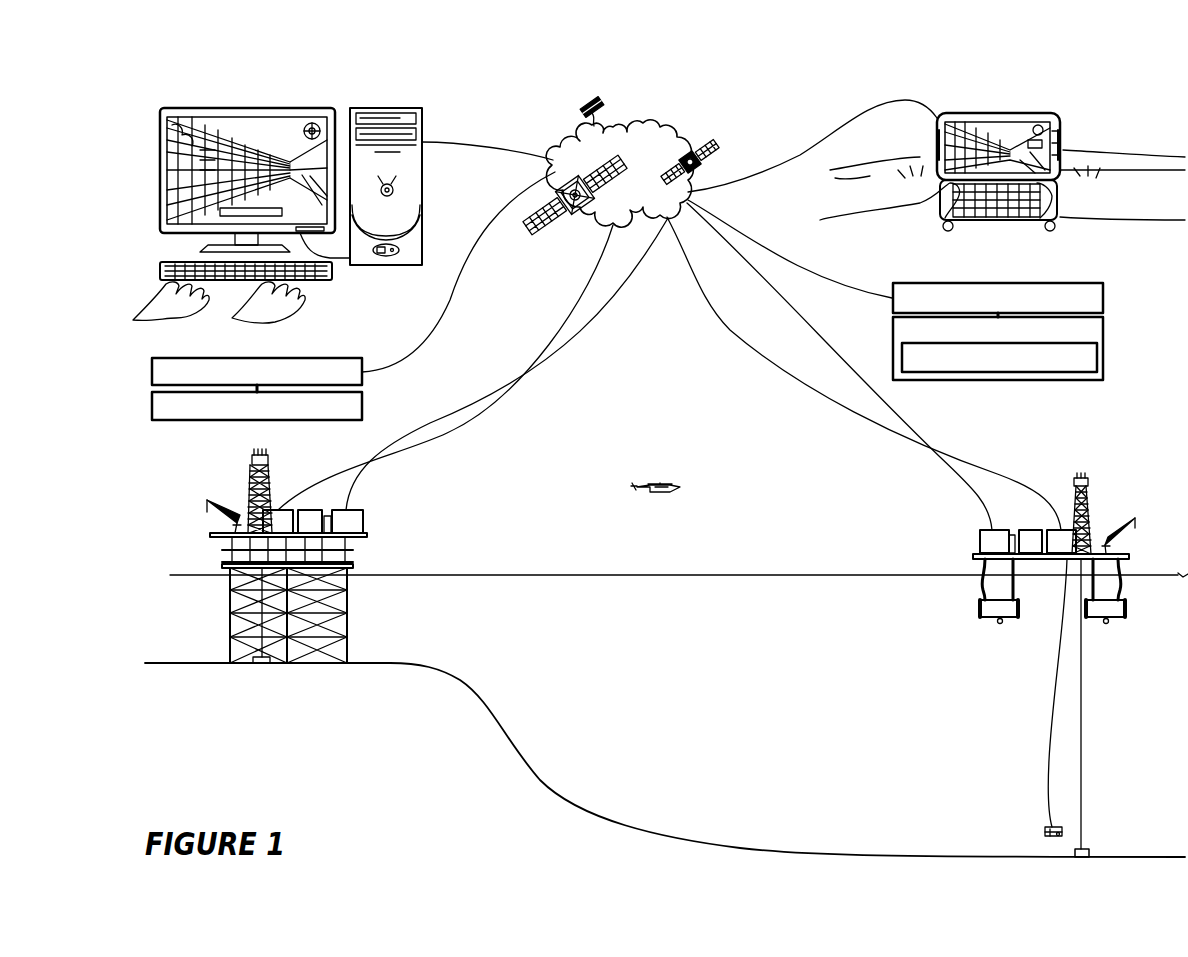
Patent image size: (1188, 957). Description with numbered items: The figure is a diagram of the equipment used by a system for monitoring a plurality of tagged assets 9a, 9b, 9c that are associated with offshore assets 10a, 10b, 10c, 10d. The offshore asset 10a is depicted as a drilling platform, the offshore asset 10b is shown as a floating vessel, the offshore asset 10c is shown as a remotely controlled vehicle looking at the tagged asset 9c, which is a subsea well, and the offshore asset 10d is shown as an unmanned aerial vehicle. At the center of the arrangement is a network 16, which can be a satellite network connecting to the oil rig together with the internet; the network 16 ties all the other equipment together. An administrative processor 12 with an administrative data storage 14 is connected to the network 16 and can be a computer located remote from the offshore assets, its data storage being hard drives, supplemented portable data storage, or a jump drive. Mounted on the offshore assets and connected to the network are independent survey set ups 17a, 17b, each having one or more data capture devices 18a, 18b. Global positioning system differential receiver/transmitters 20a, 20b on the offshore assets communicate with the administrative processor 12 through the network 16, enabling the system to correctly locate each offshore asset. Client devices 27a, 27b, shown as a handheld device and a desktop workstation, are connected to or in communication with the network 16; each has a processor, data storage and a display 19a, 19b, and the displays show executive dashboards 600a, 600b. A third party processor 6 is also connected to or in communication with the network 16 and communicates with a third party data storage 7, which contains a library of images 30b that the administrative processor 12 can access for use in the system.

The third party processor 6 is at (1103, 297).
The third party data storage 7 is at (1103, 329).
The tagged asset 9a is at (310, 521).
The tagged asset 9b is at (1030, 541).
The tagged asset 9c is at (1089, 857).
The offshore asset 10a is at (210, 535).
The offshore asset 10b is at (973, 556).
The offshore asset 10c is at (1045, 832).
The offshore asset 10d is at (647, 485).
The administrative processor 12 is at (152, 371).
The administrative data storage 14 is at (152, 405).
The network 16 is at (668, 128).
The independent survey set up 17a is at (347, 521).
The independent survey set up 17b is at (994, 541).
The data capture device 18a is at (327, 516).
The data capture device 18b is at (1012, 535).
The display 19a is at (1055, 136).
The display 19b is at (163, 112).
The global positioning system differential receiver/transmitter 20a is at (278, 521).
The global positioning system differential receiver/transmitter 20b is at (1061, 541).
The client device 27a is at (1057, 118).
The client device 27b is at (422, 115).
The library of images 30b is at (1097, 357).
The executive dashboard 600a is at (1050, 146).
The executive dashboard 600b is at (167, 141).